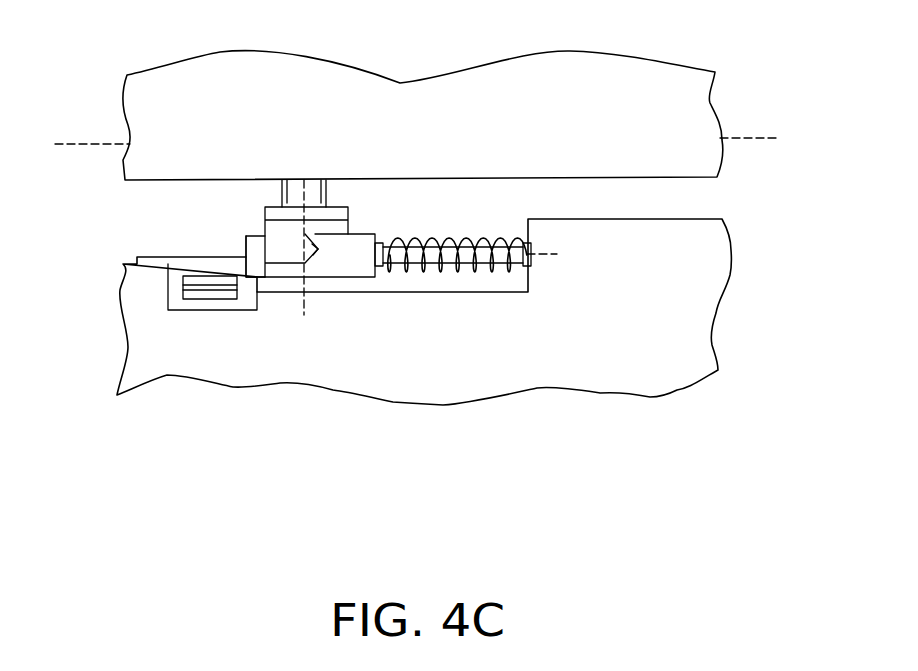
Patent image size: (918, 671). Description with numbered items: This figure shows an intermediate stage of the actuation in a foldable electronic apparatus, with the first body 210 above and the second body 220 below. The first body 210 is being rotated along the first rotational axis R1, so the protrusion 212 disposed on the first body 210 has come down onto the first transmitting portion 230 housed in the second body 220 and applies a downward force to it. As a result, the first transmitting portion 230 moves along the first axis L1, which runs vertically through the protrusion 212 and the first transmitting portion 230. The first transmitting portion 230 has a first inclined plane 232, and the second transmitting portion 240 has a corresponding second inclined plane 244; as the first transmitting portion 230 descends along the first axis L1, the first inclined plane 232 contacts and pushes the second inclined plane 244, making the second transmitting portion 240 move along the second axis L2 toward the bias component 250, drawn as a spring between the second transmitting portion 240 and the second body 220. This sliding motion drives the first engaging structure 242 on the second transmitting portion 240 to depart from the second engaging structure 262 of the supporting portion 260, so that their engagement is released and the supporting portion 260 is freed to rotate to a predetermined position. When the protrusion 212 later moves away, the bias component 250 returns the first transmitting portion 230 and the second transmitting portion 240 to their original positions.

The first body 210 is at (706, 122).
The protrusion 212 is at (313, 183).
The second body 220 is at (730, 250).
The first transmitting portion 230 is at (265, 222).
The first inclined plane 232 is at (310, 257).
The second transmitting portion 240 is at (328, 295).
The first engaging structure 242 is at (255, 265).
The second inclined plane 244 is at (318, 247).
The bias component 250 is at (433, 280).
The supporting portion 260 is at (173, 288).
The second engaging structure 262 is at (207, 300).
The first rotational axis R1 is at (430, 137).
The first axis L1 is at (306, 266).
The second axis L2 is at (554, 254).